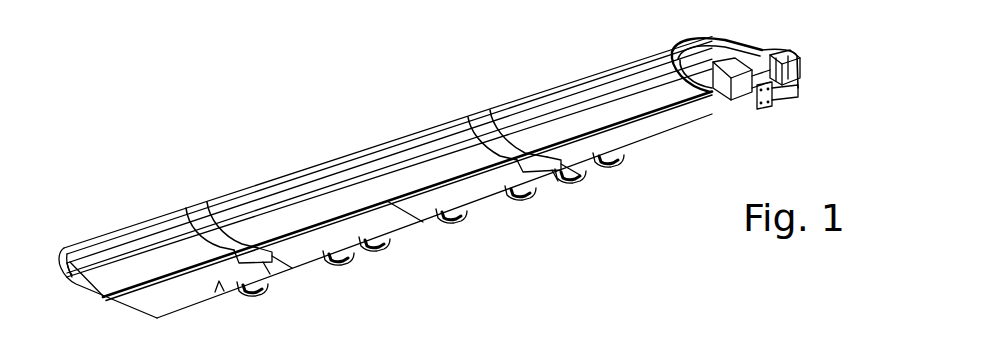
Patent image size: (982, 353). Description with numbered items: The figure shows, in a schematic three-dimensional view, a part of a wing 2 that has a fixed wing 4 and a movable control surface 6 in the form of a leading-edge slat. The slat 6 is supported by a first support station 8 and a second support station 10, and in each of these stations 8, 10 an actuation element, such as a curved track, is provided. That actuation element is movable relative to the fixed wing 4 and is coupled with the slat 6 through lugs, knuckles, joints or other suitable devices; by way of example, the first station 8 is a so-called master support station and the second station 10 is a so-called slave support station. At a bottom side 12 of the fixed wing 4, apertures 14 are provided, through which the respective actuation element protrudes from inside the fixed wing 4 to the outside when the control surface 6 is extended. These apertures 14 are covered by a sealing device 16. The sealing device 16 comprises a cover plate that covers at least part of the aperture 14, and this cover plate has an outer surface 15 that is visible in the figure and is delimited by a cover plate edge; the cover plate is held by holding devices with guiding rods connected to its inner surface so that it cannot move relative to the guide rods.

The wing 2 is at (263, 97).
The fixed wing 4 is at (676, 121).
The movable control surface 6 is at (626, 75).
The first support station 8 is at (201, 186).
The second support station 10 is at (486, 94).
The bottom side 12 is at (229, 277).
The apertures 14 is at (269, 268).
The outer surface 15 is at (186, 243).
The sealing device 16 is at (258, 236).